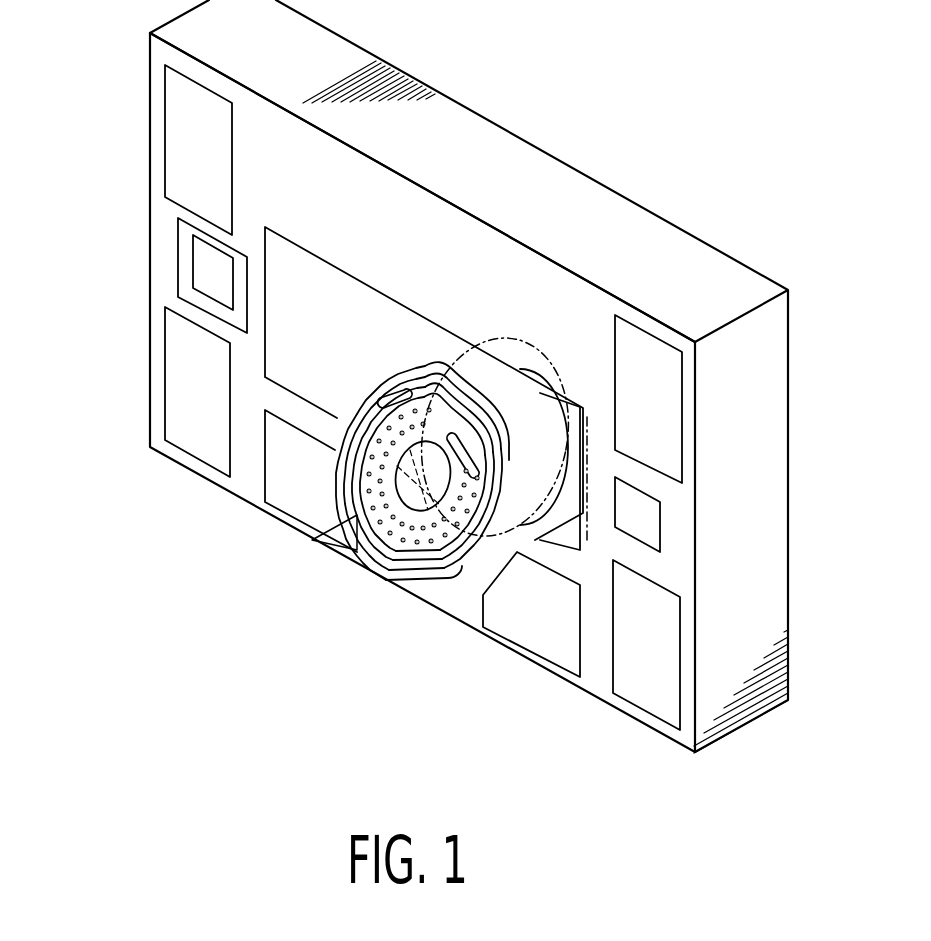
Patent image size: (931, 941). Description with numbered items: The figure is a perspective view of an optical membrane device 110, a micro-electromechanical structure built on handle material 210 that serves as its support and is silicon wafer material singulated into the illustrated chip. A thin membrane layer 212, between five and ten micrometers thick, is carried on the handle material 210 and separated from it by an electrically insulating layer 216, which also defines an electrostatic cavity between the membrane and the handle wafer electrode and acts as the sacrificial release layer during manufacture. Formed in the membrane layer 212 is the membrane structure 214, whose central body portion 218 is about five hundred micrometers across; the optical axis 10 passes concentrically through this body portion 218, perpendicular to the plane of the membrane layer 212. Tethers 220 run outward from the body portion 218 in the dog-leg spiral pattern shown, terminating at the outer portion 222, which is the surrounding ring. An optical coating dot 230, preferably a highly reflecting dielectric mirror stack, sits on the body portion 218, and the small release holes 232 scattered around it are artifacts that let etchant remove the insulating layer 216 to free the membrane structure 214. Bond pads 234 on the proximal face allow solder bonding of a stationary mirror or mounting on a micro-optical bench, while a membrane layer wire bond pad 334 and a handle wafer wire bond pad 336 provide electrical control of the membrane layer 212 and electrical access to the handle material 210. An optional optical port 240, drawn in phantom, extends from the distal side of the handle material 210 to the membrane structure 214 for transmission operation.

The optical axis 10 is at (310, 546).
The optical membrane device 110 is at (504, 120).
The handle material 210 is at (602, 217).
The membrane layer 212 is at (483, 597).
The membrane structure 214 is at (363, 390).
The insulating layer 216 is at (650, 312).
The body portion 218 is at (303, 527).
The tethers 220 is at (343, 452).
The outer portion 222 is at (318, 413).
The optical coating dot 230 is at (378, 422).
The release holes 232 is at (455, 535).
The bond pads 234 is at (663, 413).
The optical port 240 is at (510, 358).
The membrane layer wire bond pad 334 is at (650, 527).
The handle wafer wire bond pad 336 is at (207, 277).